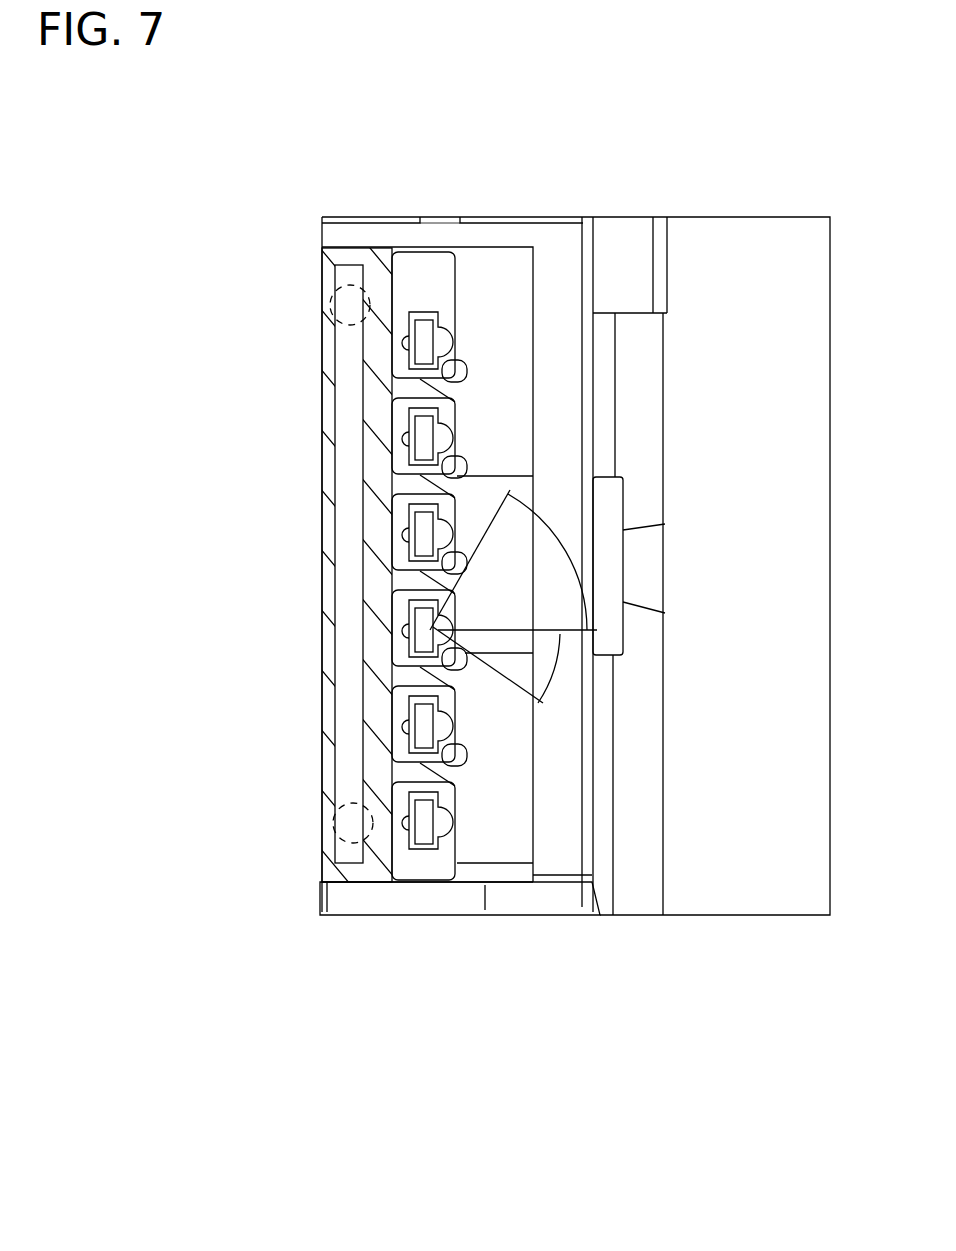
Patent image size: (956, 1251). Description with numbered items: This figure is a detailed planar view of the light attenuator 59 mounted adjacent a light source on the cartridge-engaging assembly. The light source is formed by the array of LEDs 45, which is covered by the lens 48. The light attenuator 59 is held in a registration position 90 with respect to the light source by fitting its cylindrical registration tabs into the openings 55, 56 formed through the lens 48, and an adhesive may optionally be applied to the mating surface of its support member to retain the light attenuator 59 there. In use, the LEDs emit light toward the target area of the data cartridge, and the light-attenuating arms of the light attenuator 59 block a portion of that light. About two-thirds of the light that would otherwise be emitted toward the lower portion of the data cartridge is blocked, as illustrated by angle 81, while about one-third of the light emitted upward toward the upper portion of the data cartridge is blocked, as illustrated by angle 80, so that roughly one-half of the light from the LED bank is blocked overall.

The array of LEDs 45 is at (430, 820).
The lens 48 is at (558, 247).
The opening 55 is at (335, 313).
The opening 56 is at (335, 822).
The light attenuator 59 is at (342, 593).
The angle 80 is at (540, 518).
The angle 81 is at (548, 675).
The registration position 90 is at (571, 1014).